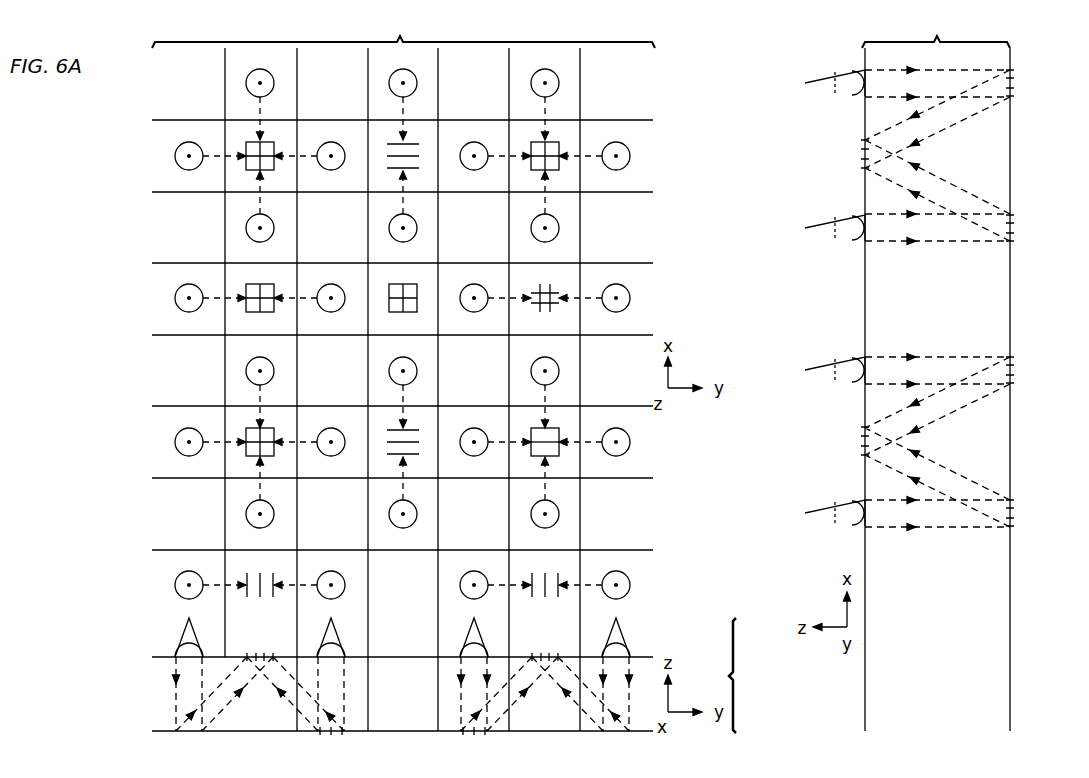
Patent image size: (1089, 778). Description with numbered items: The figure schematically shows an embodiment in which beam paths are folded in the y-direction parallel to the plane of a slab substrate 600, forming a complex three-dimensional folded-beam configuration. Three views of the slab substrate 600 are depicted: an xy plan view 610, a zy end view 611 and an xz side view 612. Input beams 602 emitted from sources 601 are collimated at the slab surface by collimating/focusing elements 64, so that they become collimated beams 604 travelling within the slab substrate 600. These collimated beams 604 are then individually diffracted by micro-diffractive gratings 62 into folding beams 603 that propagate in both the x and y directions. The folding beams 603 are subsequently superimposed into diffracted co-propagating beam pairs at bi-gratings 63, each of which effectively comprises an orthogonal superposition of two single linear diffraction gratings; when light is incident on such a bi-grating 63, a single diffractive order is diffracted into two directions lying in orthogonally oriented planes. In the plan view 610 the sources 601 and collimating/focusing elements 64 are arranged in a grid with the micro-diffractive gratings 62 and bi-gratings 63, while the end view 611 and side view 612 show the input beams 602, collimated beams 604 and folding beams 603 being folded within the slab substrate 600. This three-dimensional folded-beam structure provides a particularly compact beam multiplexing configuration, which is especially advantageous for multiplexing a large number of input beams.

The slab substrate 600 is at (666, 596).
The sources 601 is at (556, 80).
The input beams 602 is at (835, 72).
The folding beams 603 is at (402, 110).
The collimated beams 604 is at (345, 676).
The xy plan view 610 is at (403, 29).
The zy end view 611 is at (756, 675).
The xz side view 612 is at (936, 29).
The micro-diffractive gratings 62 is at (345, 733).
The bi-gratings 63 is at (548, 170).
The collimating/focusing elements 64 is at (185, 645).